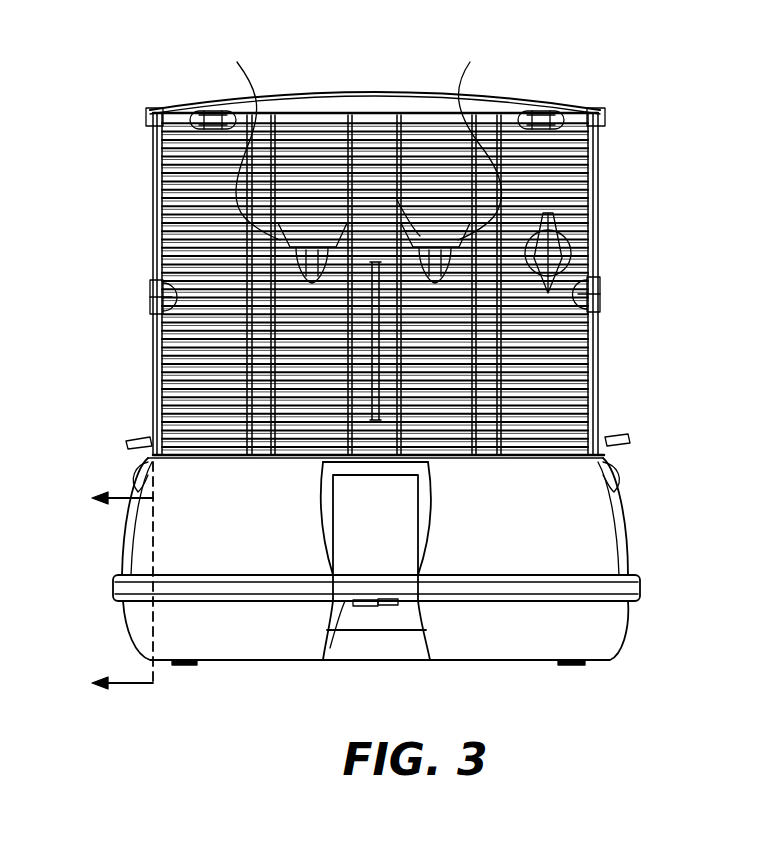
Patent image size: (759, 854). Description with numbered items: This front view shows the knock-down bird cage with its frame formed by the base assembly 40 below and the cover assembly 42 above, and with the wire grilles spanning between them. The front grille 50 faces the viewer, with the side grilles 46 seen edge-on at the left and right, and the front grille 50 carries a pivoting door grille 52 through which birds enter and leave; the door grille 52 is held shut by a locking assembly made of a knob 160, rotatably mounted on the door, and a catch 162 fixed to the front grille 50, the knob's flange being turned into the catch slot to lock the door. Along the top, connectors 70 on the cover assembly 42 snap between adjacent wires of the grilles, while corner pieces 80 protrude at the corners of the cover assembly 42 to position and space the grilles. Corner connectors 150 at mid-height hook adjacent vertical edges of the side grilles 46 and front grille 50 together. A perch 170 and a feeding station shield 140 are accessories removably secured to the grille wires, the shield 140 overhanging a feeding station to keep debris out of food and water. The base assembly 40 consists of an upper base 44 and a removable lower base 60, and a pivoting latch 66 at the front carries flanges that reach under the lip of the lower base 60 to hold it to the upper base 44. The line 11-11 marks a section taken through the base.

The section line 11- 11 is at (102, 580).
The base assembly 40 is at (636, 515).
The cover assembly 42 is at (366, 90).
The upper base 44 is at (127, 552).
The side grilles 46 is at (156, 192).
The front grille 50 is at (206, 264).
The door grille 52 is at (286, 387).
The lower base 60 is at (627, 617).
The pivoting latch 66 is at (326, 657).
The connectors 70 is at (212, 110).
The corner pieces 80 is at (147, 120).
The feeding station shield 140 is at (150, 446).
The corner connector 150 is at (150, 295).
The knob 160 is at (348, 142).
The catch 162 is at (333, 222).
The perch 170 is at (571, 247).